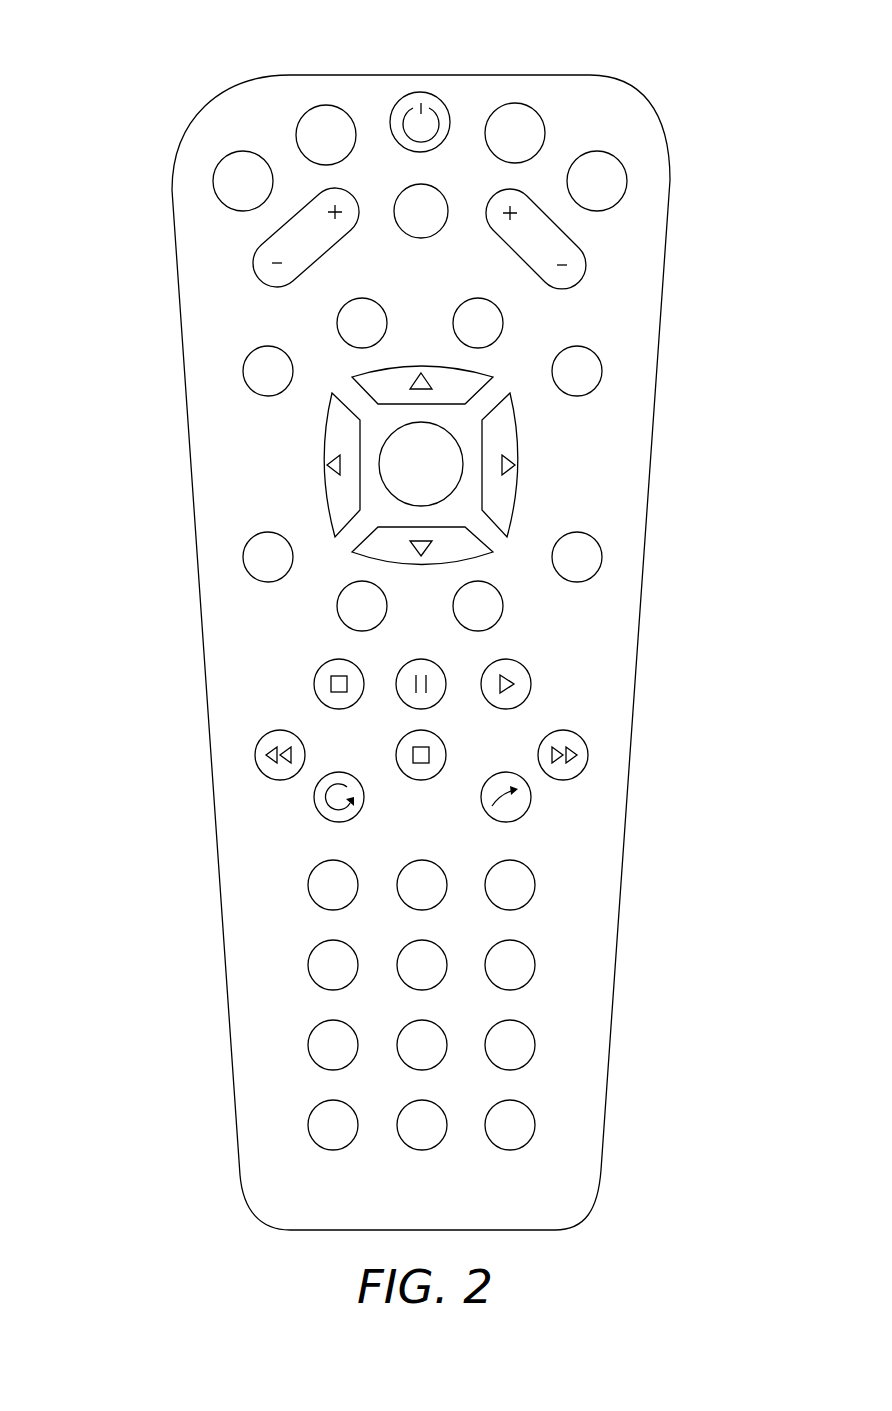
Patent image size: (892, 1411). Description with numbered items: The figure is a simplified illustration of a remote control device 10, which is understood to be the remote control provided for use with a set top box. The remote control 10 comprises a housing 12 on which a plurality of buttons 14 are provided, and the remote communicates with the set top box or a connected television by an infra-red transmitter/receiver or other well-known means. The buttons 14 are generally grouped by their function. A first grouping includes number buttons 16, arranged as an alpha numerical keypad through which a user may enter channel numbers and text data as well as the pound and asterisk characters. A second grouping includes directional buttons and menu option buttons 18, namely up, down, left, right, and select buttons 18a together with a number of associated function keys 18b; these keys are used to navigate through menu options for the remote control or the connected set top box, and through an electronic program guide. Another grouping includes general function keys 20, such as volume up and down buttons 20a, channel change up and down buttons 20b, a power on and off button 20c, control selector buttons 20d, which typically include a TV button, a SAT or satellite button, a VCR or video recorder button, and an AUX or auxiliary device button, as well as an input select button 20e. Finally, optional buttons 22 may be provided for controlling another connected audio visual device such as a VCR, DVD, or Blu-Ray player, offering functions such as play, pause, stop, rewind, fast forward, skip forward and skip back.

The remote control device 10 is at (152, 70).
The housing 12 is at (291, 75).
The buttons 14 is at (516, 103).
The number buttons 16 is at (640, 832).
The directional buttons and menu option buttons 18 is at (677, 300).
The up, down, left, right, and select buttons 18a is at (320, 465).
The associated function keys 18b is at (499, 623).
The general function keys 20 is at (687, 92).
The volume up and down buttons 20a is at (262, 282).
The channel change buttons 20b is at (580, 283).
The power on and off button 20c is at (420, 92).
The control selector buttons 20d is at (213, 182).
The input select button 20e is at (421, 238).
The optional buttons 22 is at (658, 662).